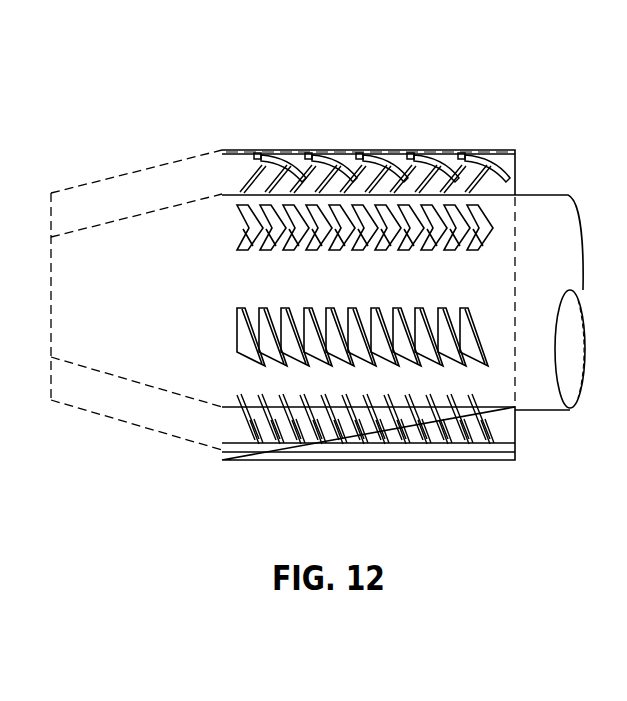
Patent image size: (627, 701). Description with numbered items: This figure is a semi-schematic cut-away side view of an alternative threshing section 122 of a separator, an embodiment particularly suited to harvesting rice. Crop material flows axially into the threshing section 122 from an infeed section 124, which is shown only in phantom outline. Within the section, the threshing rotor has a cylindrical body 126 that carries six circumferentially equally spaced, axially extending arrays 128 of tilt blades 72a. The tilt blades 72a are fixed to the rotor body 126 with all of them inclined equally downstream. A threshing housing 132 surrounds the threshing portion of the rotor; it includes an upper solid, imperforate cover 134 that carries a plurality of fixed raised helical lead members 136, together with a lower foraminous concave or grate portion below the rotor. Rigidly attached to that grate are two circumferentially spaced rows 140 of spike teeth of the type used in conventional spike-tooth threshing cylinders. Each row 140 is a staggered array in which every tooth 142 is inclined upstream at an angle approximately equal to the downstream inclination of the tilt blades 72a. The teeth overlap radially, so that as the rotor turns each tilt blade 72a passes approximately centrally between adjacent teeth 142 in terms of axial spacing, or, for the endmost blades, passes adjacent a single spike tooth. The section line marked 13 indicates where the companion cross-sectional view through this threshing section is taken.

The threshing section 122 is at (222, 102).
The infeed section 124 is at (100, 168).
The cylindrical body 126 is at (520, 195).
The arrays of tilt blades 128 is at (388, 292).
The threshing housing 132 is at (396, 125).
The upper solid cover 134 is at (470, 150).
The helical lead members 136 is at (395, 152).
The tilt blades 72a is at (478, 324).
The rows of spike teeth 140 is at (418, 462).
The spike tooth 142 is at (474, 434).
The section line 13- 13 is at (358, 262).